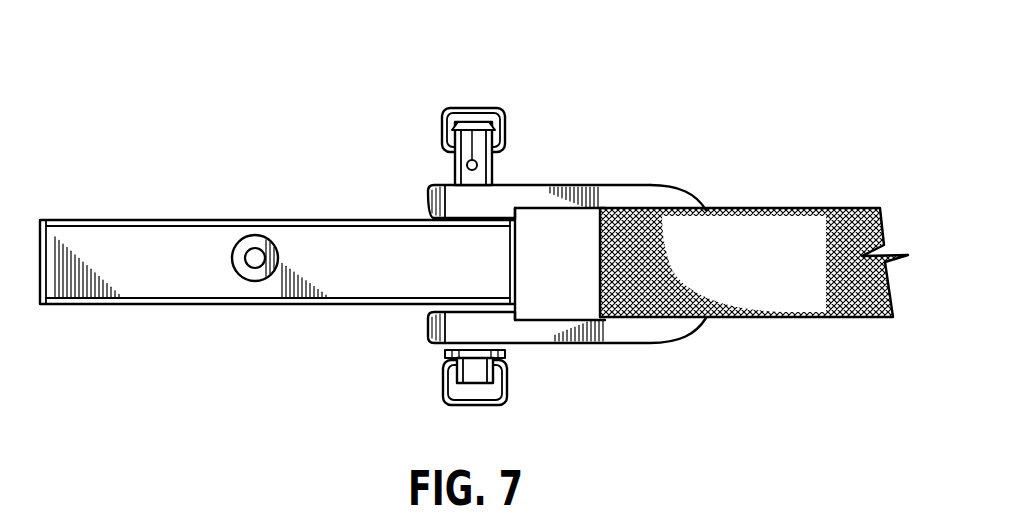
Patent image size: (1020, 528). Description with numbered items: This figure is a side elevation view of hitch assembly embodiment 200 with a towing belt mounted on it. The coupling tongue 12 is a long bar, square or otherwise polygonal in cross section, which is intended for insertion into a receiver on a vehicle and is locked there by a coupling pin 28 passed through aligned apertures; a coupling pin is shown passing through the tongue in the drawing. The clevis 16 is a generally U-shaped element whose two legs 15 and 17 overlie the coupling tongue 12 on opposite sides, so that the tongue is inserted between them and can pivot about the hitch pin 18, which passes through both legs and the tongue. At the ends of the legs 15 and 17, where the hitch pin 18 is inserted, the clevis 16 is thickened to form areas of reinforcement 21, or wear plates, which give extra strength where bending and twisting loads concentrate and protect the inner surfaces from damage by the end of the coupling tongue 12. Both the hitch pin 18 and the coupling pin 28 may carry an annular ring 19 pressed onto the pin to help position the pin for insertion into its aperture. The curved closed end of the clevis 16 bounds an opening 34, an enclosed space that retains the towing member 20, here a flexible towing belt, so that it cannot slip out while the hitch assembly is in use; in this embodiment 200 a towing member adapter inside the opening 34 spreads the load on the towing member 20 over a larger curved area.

The hitch assembly embodiment 200 is at (236, 126).
The coupling tongue 12 is at (338, 254).
The coupling pin 28 is at (250, 242).
The annular ring 19 is at (244, 273).
The hitch pin 18 is at (468, 138).
The areas of reinforcement 21 is at (486, 206).
The leg 15 is at (548, 198).
The clevis 16 is at (612, 208).
The leg 17 is at (557, 332).
The towing member 20 is at (752, 240).
The opening 34 is at (575, 276).